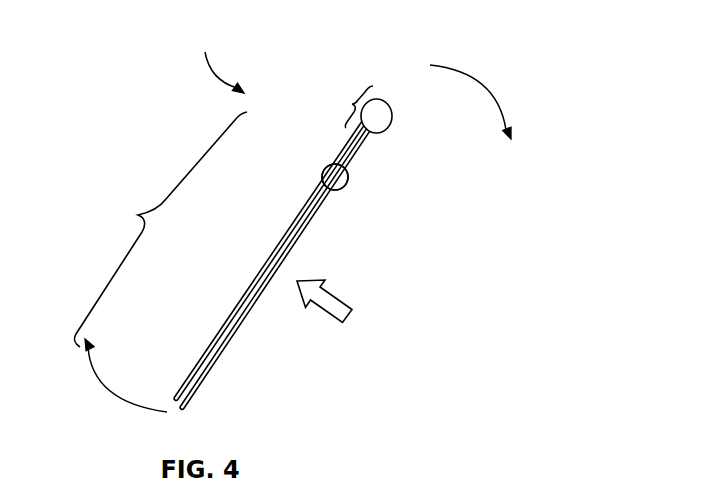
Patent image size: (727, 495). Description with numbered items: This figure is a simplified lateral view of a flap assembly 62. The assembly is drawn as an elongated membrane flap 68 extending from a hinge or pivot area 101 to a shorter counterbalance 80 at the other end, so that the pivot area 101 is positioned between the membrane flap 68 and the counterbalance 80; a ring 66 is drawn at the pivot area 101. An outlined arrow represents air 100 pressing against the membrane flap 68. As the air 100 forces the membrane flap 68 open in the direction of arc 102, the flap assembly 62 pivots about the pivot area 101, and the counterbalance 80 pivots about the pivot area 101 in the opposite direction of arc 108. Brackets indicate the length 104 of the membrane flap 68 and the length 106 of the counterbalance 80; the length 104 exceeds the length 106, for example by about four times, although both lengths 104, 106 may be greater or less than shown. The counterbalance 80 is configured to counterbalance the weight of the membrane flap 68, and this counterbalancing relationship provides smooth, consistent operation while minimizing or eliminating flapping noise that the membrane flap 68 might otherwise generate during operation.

The flap assembly 62 is at (218, 59).
The ring 66 is at (338, 186).
The membrane flap 68 is at (265, 268).
The counterbalance 80 is at (392, 123).
The air 100 is at (336, 295).
The pivot area 101 is at (329, 166).
The arc 102 is at (104, 384).
The length of the membrane flap 104 is at (161, 229).
The length of the counterbalance 106 is at (338, 104).
The arc 108 is at (479, 82).